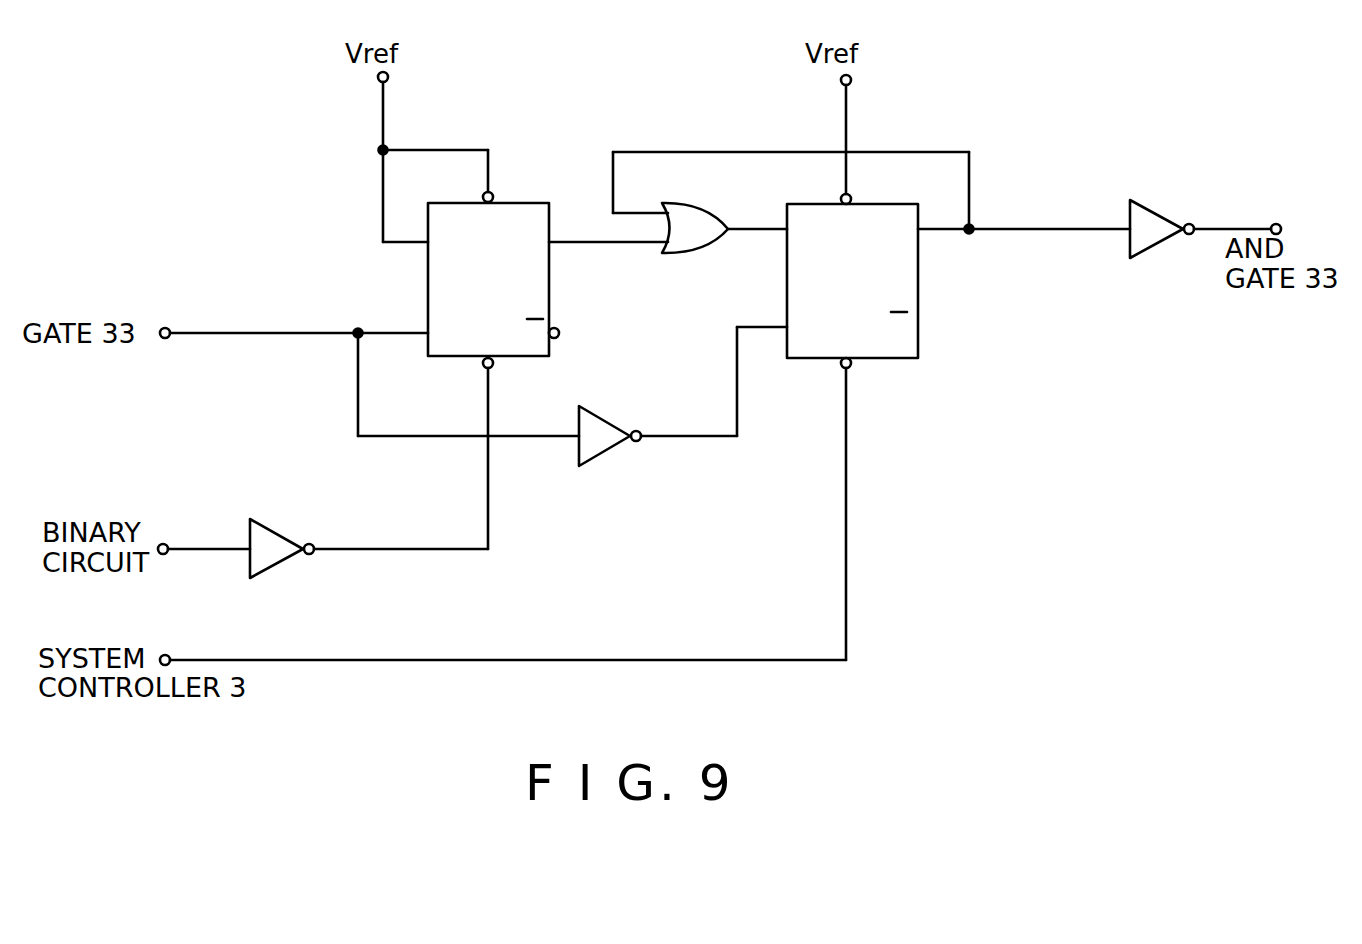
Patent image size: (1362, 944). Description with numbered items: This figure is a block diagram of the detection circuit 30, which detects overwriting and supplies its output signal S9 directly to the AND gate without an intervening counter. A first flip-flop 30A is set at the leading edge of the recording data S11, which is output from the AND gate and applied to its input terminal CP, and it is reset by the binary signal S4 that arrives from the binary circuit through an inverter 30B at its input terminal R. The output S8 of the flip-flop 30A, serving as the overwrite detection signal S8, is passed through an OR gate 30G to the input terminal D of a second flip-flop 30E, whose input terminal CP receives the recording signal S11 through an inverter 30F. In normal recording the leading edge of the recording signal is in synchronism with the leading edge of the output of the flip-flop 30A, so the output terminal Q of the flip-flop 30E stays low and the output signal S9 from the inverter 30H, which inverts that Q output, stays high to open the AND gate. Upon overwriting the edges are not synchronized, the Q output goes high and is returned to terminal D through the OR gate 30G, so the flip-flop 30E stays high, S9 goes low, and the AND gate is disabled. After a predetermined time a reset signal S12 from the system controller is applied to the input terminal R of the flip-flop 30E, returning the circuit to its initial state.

The detection circuit 30 is at (526, 180).
The flip-flop 30A is at (557, 343).
The inverter 30B is at (276, 527).
The second flip-flop 30E is at (919, 292).
The inverter 30F is at (609, 451).
The OR gate 30G is at (699, 204).
The inverter 30H is at (1150, 202).
The binary signal S4 is at (200, 548).
The overwrite detection signal S8 is at (570, 244).
The output signal S9 is at (1220, 228).
The recording data S11 is at (258, 331).
The signal from system controller 3 S12 is at (256, 660).